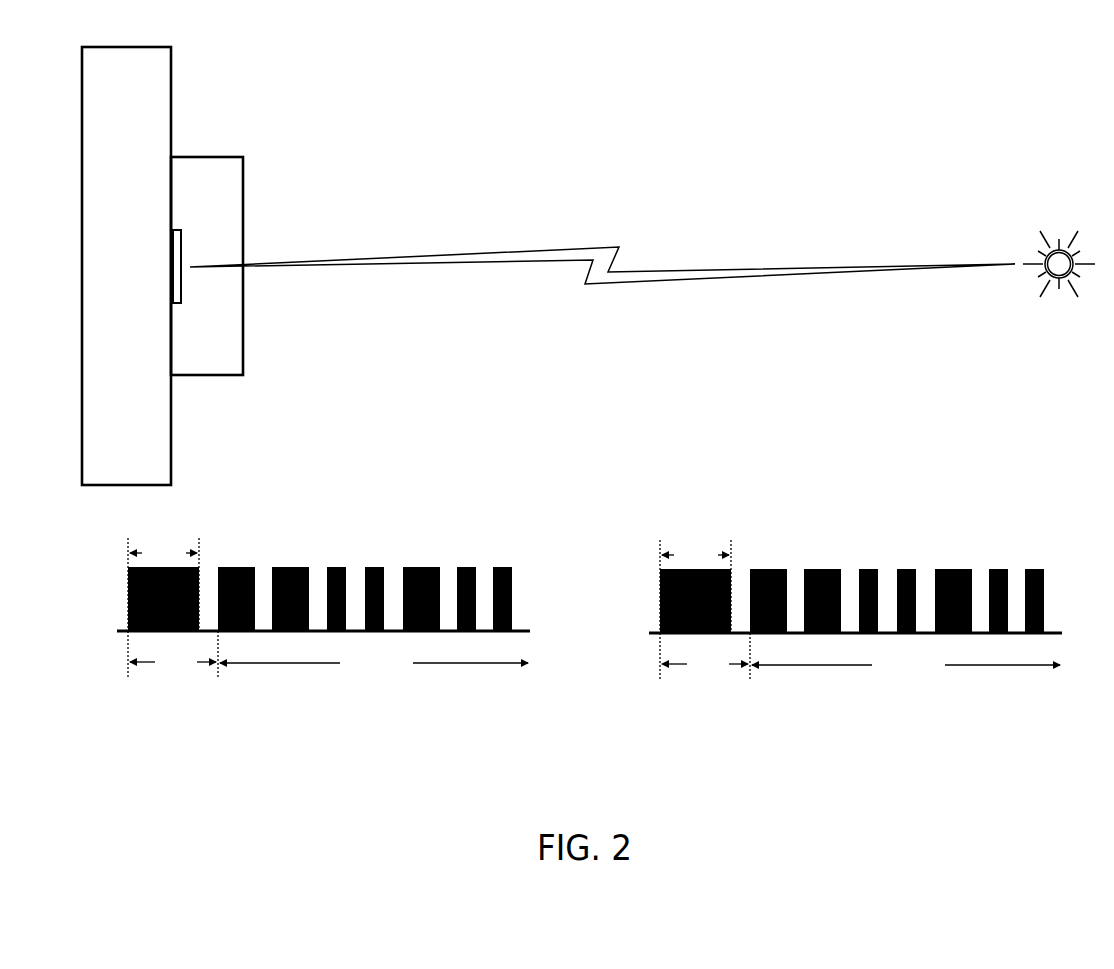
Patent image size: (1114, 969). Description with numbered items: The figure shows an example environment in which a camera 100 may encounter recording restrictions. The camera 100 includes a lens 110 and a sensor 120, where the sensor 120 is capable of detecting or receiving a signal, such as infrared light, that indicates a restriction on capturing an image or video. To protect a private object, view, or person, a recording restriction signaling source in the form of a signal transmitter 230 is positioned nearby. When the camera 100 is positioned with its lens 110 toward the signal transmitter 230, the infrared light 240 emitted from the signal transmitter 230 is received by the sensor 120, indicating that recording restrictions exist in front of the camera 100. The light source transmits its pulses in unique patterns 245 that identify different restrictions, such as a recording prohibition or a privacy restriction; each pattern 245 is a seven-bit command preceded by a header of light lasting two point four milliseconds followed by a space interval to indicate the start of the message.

The camera 100 is at (171, 69).
The lens 110 is at (243, 178).
The sensor 120 is at (181, 303).
The signal transmitter 230 is at (1032, 236).
The infrared signal 240 is at (630, 282).
The unique signal pattern 245 is at (237, 514).